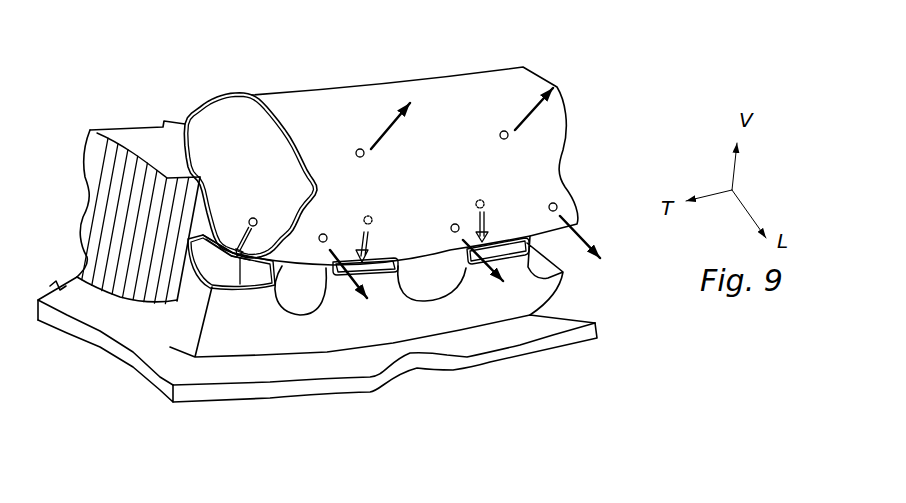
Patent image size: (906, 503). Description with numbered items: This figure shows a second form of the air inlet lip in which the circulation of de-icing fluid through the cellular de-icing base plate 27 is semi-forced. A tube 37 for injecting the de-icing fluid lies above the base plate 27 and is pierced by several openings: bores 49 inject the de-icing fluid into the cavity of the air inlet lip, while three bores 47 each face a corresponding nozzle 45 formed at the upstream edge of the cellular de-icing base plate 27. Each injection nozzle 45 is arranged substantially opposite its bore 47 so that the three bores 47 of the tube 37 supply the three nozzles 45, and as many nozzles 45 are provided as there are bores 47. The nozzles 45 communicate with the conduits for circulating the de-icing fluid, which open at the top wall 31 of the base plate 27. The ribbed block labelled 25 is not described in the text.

The ribbed block 25 is at (107, 204).
The cellular de-icing base plate 27 is at (241, 337).
The top wall 31 is at (125, 292).
The tube for injecting the de-icing fluid 37 is at (440, 108).
The nozzle for injecting the de-icing fluid 45 is at (513, 272).
The bore of the tube 47 is at (484, 203).
The bores of the tube 49 is at (549, 204).